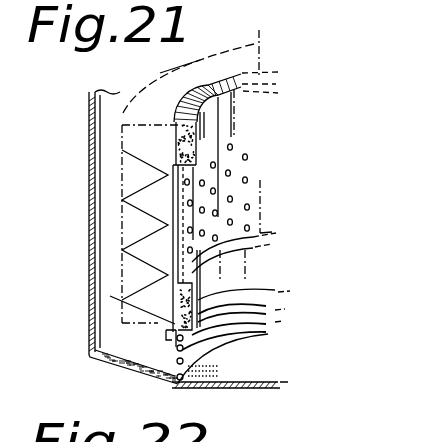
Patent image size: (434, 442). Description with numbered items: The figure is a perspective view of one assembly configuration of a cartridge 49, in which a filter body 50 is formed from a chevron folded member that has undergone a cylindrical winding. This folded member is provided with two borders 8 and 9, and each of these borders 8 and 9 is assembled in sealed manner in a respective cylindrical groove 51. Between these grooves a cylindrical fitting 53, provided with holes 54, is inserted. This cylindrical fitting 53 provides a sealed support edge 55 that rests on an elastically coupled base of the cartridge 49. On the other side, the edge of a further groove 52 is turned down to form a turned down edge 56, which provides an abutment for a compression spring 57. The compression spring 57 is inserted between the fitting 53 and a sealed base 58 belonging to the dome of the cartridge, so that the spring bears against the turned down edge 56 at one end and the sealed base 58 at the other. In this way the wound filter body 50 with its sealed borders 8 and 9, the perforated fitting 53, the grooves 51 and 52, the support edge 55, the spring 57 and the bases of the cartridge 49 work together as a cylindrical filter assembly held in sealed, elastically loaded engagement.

The border 8 is at (178, 147).
The border 9 is at (174, 309).
The cartridge 49 is at (84, 272).
The filter body 50 is at (148, 199).
The cylindrical groove 51 is at (200, 140).
The groove 52 is at (196, 282).
The fitting 53 is at (192, 221).
The holes 54 is at (250, 184).
The sealed support edge 55 is at (240, 80).
The turned down edge 56 is at (168, 338).
The compression spring 57 is at (126, 362).
The sealed base 58 is at (246, 382).